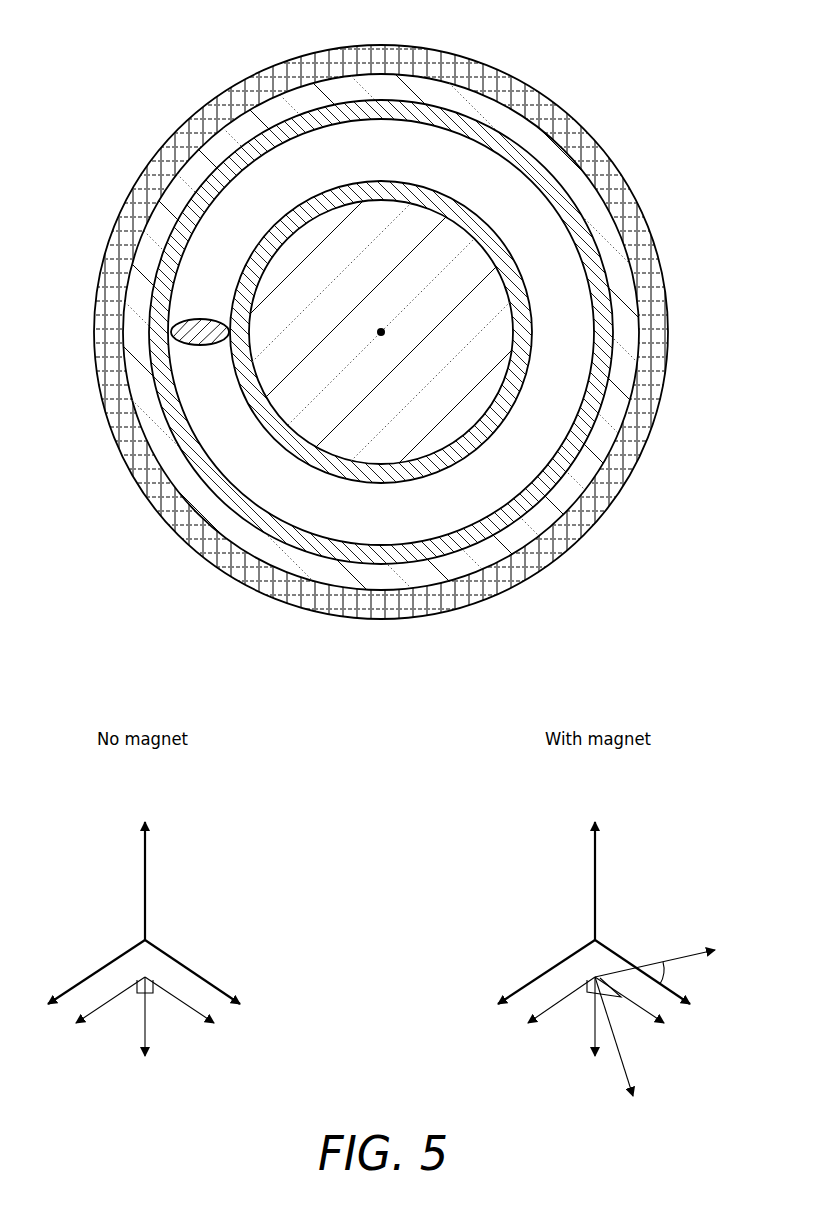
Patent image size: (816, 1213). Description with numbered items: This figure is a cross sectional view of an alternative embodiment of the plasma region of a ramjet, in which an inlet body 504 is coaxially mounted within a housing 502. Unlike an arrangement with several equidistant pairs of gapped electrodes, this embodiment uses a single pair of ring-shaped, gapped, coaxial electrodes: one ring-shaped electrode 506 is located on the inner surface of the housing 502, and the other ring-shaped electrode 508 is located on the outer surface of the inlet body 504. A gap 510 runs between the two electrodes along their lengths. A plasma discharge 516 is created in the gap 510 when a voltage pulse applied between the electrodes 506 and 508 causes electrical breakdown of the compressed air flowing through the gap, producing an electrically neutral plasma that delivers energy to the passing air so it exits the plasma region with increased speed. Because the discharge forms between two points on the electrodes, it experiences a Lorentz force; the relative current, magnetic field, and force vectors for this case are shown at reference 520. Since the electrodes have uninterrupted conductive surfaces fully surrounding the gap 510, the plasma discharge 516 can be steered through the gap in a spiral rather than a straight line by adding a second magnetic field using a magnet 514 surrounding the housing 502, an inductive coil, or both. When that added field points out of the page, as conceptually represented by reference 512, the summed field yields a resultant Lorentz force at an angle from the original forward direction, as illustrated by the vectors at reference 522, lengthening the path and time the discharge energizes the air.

The housing 502 is at (487, 108).
The inlet body 504 is at (320, 228).
The ring-shaped electrode 506 is at (203, 193).
The ring-shaped electrode 508 is at (495, 247).
The gap 510 is at (565, 332).
The direction of second magnetic field 512 is at (381, 332).
The magnet 514 is at (282, 68).
The plasma discharge 516 is at (171, 331).
The vector diagram without magnet 520 is at (96, 840).
The vector diagram with magnet 522 is at (642, 840).